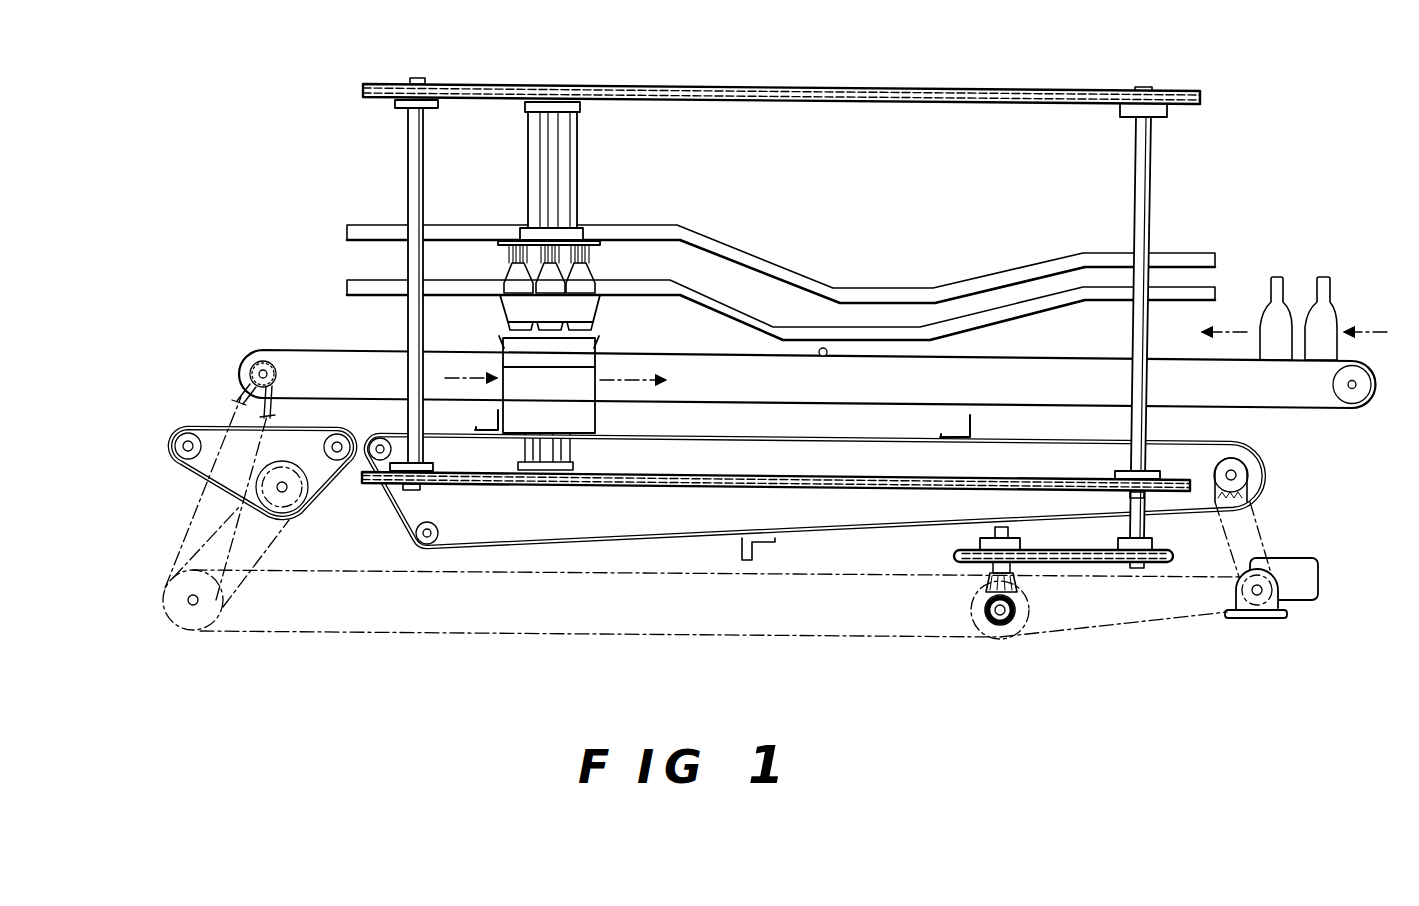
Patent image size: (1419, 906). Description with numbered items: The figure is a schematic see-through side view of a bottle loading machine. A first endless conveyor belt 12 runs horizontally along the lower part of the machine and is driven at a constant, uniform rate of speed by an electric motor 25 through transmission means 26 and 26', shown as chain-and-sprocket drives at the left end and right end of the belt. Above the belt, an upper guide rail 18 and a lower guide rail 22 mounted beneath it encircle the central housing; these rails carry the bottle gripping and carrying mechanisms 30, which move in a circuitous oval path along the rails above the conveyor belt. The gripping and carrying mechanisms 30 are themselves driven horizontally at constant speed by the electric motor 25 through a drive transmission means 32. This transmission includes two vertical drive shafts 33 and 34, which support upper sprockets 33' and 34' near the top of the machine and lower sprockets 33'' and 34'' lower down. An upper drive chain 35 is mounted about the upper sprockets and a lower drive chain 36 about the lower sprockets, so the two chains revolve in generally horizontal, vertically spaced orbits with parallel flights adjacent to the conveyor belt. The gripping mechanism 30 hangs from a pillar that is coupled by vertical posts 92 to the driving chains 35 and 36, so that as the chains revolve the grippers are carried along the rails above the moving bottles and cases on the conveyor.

The first endless conveyor belt 12 is at (314, 350).
The upper guide rail 18 is at (878, 292).
The lower guide rail 22 is at (984, 318).
The electric motor 25 is at (1300, 566).
The transmission means 26 is at (251, 473).
The transmission means 26' is at (1266, 519).
The bottle gripping and carrying mechanism 30 is at (598, 270).
The drive transmission means 32 is at (1066, 566).
The vertical drive shaft 33 is at (1160, 327).
The upper sprocket 33' is at (1182, 87).
The lower sprocket 33'' is at (1116, 472).
The vertical drive shaft 34 is at (400, 285).
The upper sprocket 34' is at (403, 77).
The lower sprocket 34'' is at (434, 488).
The upper drive chain 35 is at (900, 84).
The lower drive chain 36 is at (810, 479).
The vertical post 92 is at (570, 196).